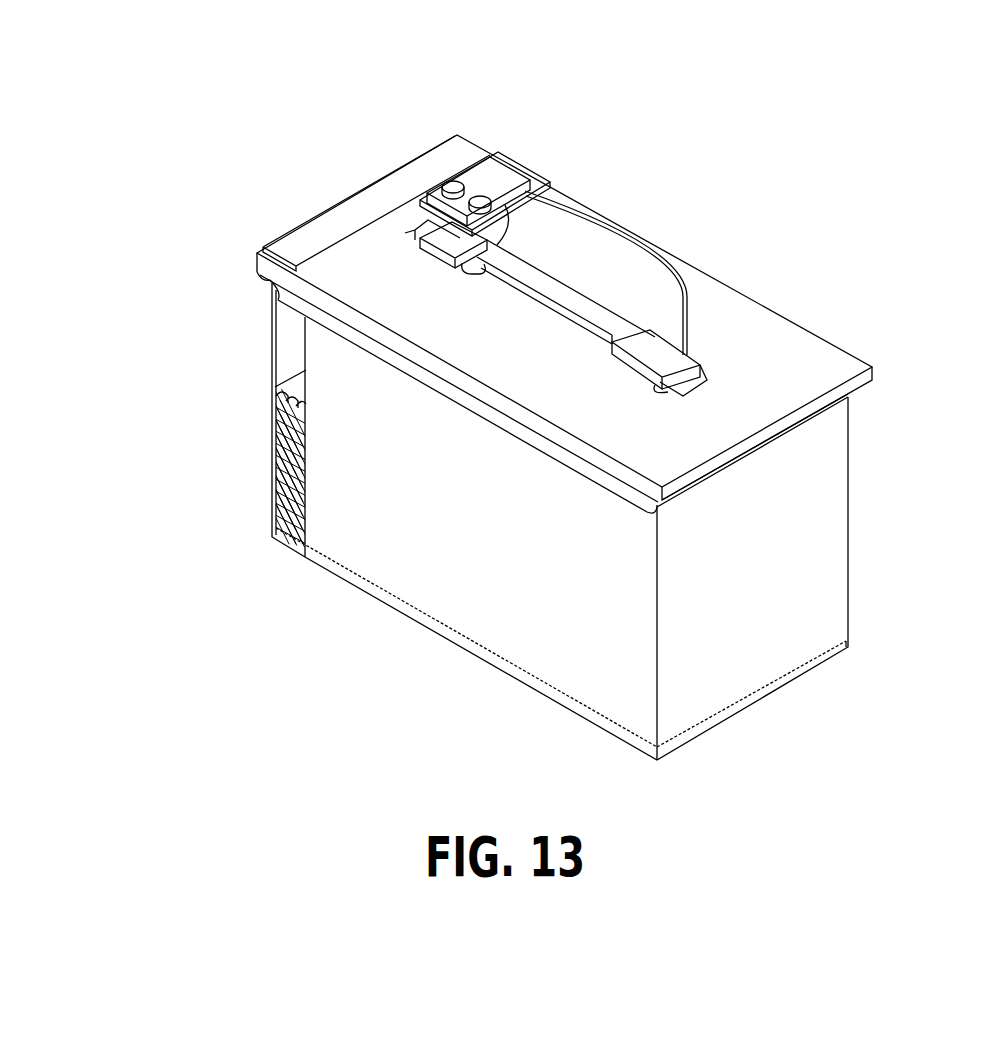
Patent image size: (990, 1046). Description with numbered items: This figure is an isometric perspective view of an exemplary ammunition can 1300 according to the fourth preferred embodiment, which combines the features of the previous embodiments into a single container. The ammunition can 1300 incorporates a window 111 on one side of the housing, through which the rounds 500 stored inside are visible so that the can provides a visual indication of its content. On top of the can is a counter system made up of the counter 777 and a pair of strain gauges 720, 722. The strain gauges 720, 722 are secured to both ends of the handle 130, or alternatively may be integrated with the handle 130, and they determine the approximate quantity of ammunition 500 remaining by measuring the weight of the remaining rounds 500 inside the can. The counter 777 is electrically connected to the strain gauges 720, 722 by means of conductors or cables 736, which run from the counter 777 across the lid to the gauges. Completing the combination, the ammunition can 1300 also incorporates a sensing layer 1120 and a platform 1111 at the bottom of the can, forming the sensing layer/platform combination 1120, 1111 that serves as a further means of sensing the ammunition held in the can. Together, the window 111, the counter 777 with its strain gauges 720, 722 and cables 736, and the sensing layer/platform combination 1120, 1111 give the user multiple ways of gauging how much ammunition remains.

The ammunition can 1300 is at (468, 74).
The counter 777 is at (503, 168).
The strain gauge 720 is at (422, 241).
The handle 130 is at (570, 298).
The cables 736 is at (686, 293).
The strain gauge 722 is at (693, 360).
The window 111 is at (290, 367).
The rounds 500 is at (278, 470).
The sensing layer 1120 is at (512, 670).
The platform 1111 is at (795, 670).